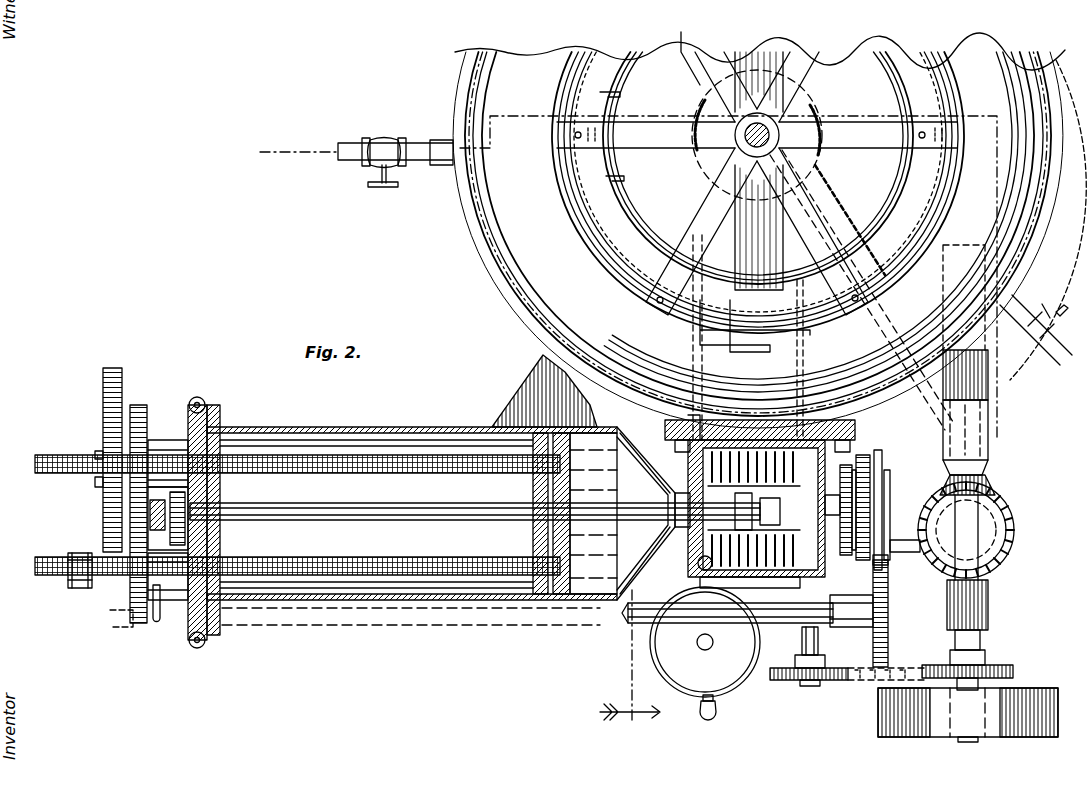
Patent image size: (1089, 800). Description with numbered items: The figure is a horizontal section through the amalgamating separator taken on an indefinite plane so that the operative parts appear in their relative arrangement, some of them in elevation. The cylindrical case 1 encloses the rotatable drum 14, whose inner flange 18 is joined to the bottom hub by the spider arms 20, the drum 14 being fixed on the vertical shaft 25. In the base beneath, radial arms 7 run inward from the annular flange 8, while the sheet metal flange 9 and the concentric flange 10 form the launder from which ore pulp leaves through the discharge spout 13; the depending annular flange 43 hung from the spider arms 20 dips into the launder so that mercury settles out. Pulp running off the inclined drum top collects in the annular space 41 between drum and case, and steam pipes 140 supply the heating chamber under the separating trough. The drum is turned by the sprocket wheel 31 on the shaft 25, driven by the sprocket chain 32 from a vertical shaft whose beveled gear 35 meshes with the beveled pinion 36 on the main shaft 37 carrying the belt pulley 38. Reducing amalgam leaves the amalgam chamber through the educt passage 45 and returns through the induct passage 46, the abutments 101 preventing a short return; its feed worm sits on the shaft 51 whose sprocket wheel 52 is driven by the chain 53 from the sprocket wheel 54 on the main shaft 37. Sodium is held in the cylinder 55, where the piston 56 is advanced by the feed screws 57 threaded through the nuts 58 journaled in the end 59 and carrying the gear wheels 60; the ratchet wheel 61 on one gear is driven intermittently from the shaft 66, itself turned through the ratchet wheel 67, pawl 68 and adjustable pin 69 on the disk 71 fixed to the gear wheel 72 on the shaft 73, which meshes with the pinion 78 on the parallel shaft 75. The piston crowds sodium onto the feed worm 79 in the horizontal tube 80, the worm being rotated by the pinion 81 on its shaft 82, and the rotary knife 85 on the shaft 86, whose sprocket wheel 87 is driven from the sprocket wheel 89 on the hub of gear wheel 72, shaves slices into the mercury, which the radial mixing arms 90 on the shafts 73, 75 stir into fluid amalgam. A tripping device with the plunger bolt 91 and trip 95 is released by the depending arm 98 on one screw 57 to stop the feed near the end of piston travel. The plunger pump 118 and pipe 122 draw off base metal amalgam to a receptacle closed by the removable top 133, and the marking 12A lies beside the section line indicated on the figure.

The cylindrical case 1 is at (497, 289).
The radial arms 7 is at (770, 254).
The annular flange 8 is at (625, 214).
The sheet metal flange 9 is at (633, 238).
The concentric flange 10 is at (583, 208).
The section arrow line 12A is at (650, 381).
The discharge spout 13 is at (620, 178).
The drum 14 is at (1070, 382).
The inner flange 18 is at (588, 244).
The spider arms 20 is at (757, 183).
The vertical shaft 25 is at (745, 135).
The sprocket wheel 31 is at (703, 97).
The sprocket chain 32 is at (858, 195).
The beveled gear 35 is at (1002, 508).
The beveled pinion 36 is at (990, 484).
The main shaft 37 is at (985, 641).
The belt pulley 38 is at (880, 731).
The annular space 41 is at (1030, 262).
The depending annular flange 43 is at (620, 250).
The educt passage 45 is at (820, 335).
The induct passage 46 is at (690, 412).
The shaft 51 is at (818, 636).
The sprocket wheel 52 is at (780, 682).
The chain 53 is at (858, 680).
The sprocket wheel 54 is at (1013, 672).
The sodium-containing cylinder 55 is at (402, 427).
The movable piston 56 is at (570, 487).
The feed screws 57 is at (56, 457).
The nuts 58 is at (167, 442).
The end of the cylinder 59 is at (208, 528).
The gear wheels 60 is at (140, 405).
The ratchet wheel 61 is at (110, 368).
The shaft 66 is at (632, 614).
The ratchet wheel 67 is at (888, 638).
The pawl 68 is at (888, 570).
The pin 69 is at (888, 492).
The disk 71 is at (882, 476).
The gear wheel 72 is at (868, 470).
The shaft 73 is at (748, 420).
The shaft 75 is at (898, 540).
The pinion 78 is at (848, 596).
The feed worm 79 is at (641, 510).
The horizontal tube 80 is at (668, 521).
The pinion 81 is at (200, 498).
The shaft 82 is at (292, 504).
The rotary knife 85 is at (690, 560).
The shaft 86 is at (748, 566).
The sprocket wheel 87 is at (846, 540).
The sprocket wheel 89 is at (855, 466).
The radial mixing arms 90 is at (776, 440).
The vertical plunger bolt 91 is at (112, 497).
The trip 95 is at (156, 622).
The depending arm 98 is at (74, 590).
The abutments 101 is at (728, 318).
The plunger pump 118 is at (700, 580).
The pipe 122 is at (712, 714).
The removable top 133 is at (705, 642).
The steam pipes 140 is at (400, 148).